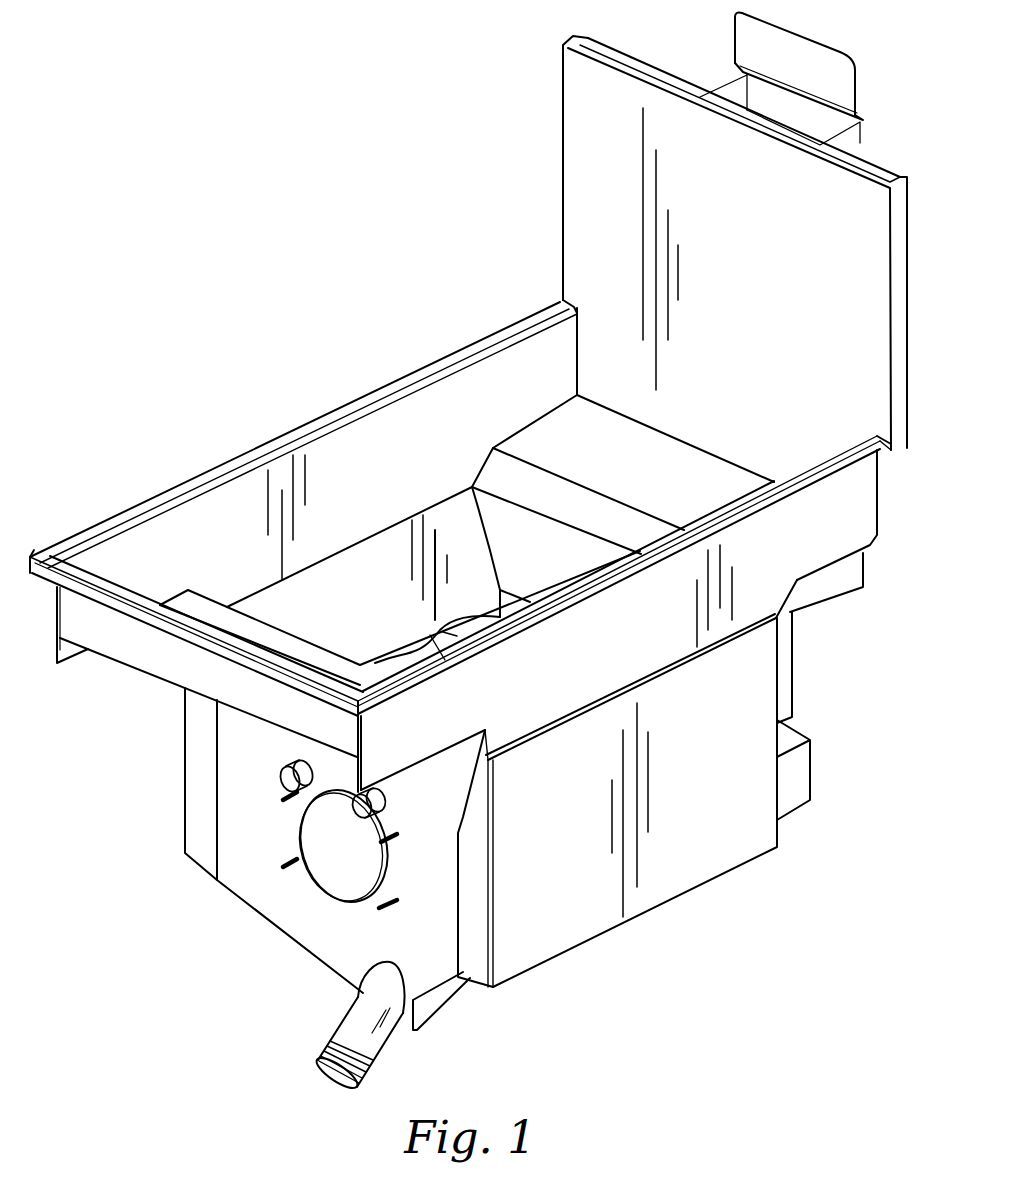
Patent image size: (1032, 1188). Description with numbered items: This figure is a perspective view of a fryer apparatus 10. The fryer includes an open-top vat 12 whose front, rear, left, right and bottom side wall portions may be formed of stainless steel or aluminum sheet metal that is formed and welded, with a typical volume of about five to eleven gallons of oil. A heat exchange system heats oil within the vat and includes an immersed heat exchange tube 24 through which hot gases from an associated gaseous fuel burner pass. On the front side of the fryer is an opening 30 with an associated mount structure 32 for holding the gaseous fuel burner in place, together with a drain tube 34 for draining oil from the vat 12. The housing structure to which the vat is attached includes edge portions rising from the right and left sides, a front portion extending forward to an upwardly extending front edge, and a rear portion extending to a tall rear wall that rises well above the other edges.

The fryer apparatus 10 is at (468, 553).
The open-top vat 12 is at (397, 574).
The heat exchange tube 24 is at (445, 642).
The opening 30 is at (323, 880).
The mount structure 32 is at (287, 857).
The drain tube 34 is at (363, 1017).